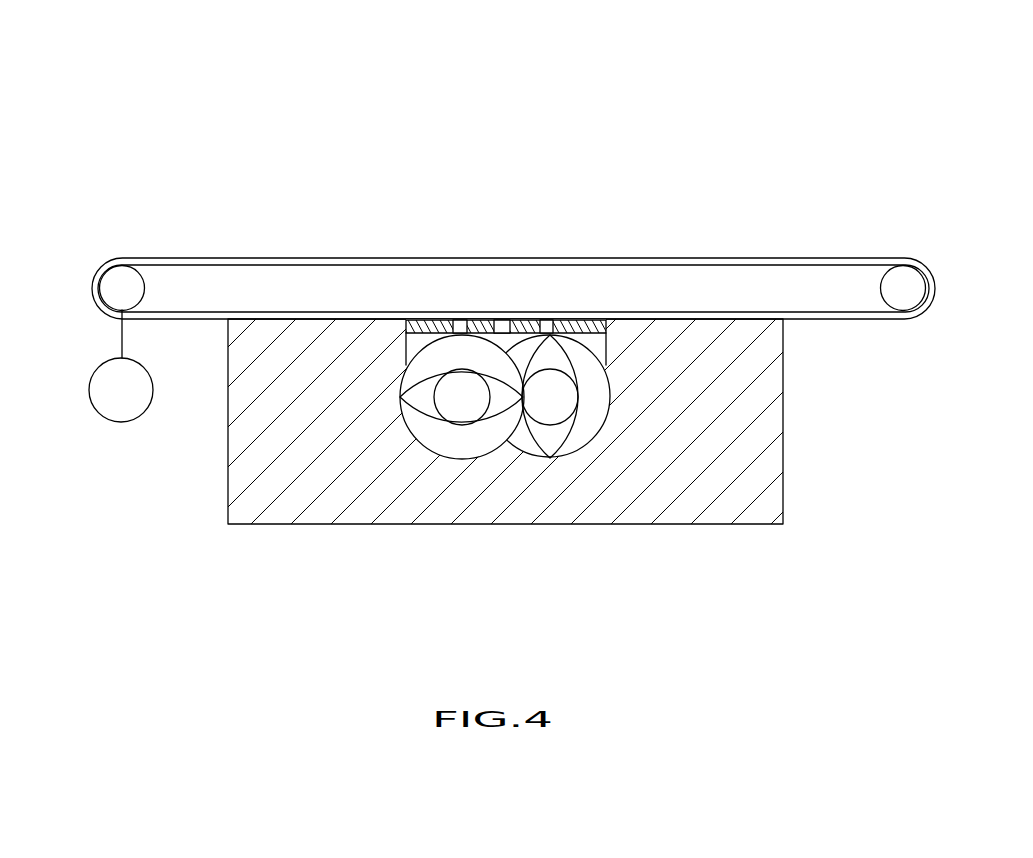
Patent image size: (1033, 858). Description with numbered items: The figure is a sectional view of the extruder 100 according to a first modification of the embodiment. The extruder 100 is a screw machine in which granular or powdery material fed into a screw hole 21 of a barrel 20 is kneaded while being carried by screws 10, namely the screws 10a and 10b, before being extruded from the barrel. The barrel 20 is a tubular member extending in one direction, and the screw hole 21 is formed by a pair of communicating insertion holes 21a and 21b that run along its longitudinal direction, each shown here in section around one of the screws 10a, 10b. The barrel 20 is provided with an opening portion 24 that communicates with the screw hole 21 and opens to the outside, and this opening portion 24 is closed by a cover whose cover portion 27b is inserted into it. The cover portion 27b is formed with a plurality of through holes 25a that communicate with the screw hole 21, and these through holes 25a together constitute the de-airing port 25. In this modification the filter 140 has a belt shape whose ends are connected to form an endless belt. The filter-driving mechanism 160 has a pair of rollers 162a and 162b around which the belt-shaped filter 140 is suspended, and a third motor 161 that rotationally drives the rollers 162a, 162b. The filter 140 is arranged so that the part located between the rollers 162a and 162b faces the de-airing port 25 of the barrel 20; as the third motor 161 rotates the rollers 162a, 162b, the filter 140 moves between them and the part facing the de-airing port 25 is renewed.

The extruder 100 is at (162, 90).
The filter-driving mechanism 160 is at (92, 226).
The third motor 161 is at (95, 413).
The roller 162a is at (125, 283).
The roller 162b is at (907, 286).
The filter 140 is at (641, 257).
The barrel 20 is at (228, 427).
The opening portion 24 is at (503, 285).
The de-airing port 25 is at (503, 345).
The through holes 25a is at (410, 343).
The cover portion 27b is at (606, 330).
The screw hole 21 is at (457, 454).
The insertion hole 21a is at (433, 442).
The insertion hole 21b is at (520, 440).
The screws 10 is at (468, 468).
The screw 10a is at (452, 410).
The screw 10b is at (557, 409).